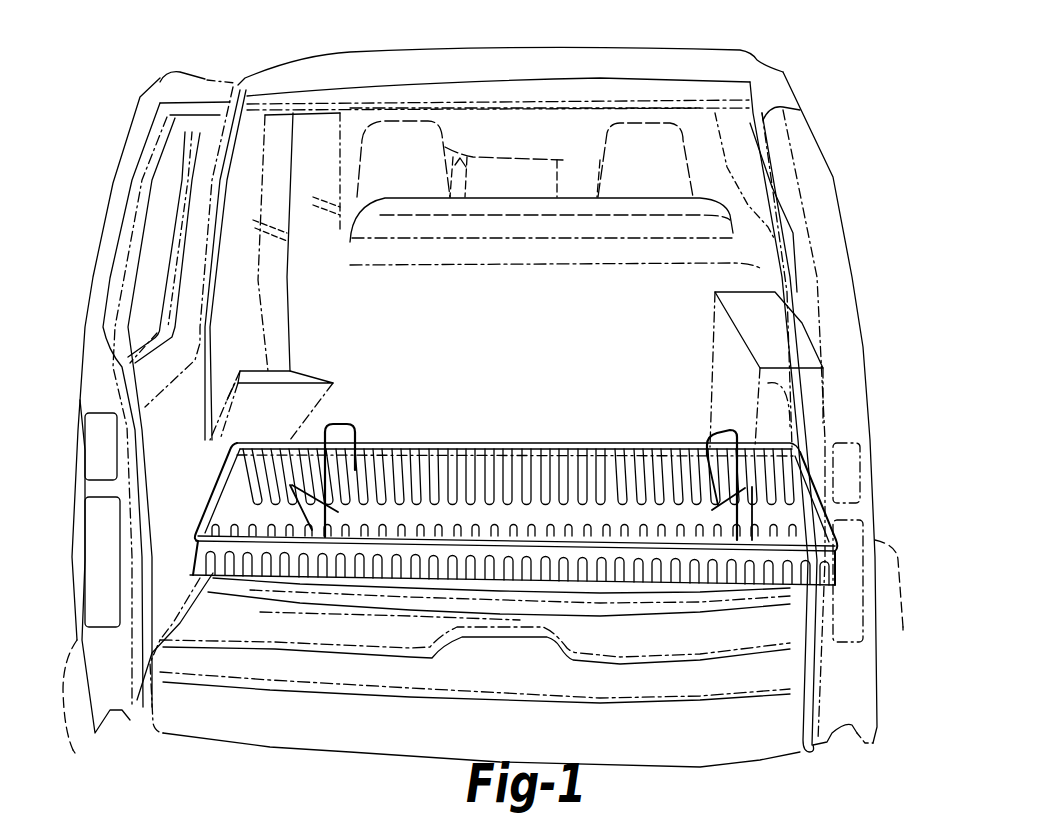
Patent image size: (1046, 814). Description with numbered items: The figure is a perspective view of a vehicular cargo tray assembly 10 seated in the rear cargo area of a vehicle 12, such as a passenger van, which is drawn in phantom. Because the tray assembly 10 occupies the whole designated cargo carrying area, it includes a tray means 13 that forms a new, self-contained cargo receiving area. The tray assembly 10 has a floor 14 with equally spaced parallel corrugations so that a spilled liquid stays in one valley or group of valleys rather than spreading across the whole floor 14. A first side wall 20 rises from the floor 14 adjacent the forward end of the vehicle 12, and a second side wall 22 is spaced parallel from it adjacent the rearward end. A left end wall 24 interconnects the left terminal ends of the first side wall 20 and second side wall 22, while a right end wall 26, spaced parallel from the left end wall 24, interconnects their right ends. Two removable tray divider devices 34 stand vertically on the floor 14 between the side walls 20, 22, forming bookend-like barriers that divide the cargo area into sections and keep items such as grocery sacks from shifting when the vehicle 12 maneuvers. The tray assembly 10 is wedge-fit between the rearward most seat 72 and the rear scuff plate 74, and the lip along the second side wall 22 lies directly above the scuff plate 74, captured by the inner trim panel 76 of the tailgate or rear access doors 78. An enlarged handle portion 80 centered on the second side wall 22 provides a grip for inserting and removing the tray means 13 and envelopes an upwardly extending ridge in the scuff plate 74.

The vehicular cargo tray assembly 10 is at (548, 410).
The vehicle 12 is at (698, 28).
The tray means 13 is at (503, 437).
The floor 14 is at (444, 488).
The first side wall 20 is at (570, 447).
The second side wall 22 is at (618, 560).
The left end wall 24 is at (213, 483).
The right end wall 26 is at (810, 473).
The removable tray divider device 34 is at (350, 418).
The rearward most seat 72 is at (760, 268).
The scuff plate 74 is at (380, 628).
The inner trim panel 76 is at (130, 703).
The rear access doors 78 is at (485, 707).
The handle portion 80 is at (517, 557).